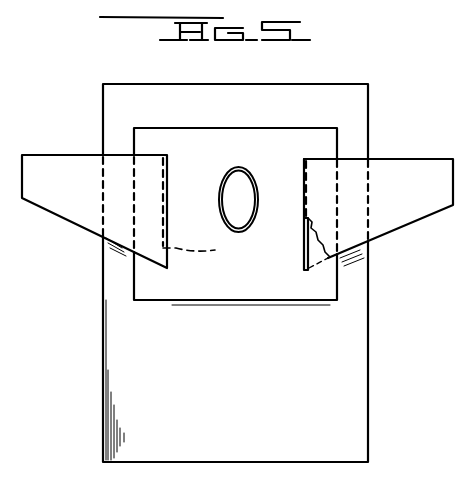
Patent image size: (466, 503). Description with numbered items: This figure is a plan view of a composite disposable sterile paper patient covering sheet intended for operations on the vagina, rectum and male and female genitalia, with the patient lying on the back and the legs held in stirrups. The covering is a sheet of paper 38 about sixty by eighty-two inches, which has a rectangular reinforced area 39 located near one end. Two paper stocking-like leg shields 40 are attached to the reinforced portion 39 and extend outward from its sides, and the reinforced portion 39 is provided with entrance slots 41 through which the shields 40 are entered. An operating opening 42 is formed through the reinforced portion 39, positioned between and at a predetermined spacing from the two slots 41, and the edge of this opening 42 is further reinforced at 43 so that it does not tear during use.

The sheet of paper 38 is at (347, 61).
The rectangular reinforced area 39 is at (250, 108).
The leg shields 40 is at (80, 150).
The entrance slots 41 is at (302, 249).
The operating opening 42 is at (241, 190).
The reinforcement 43 is at (222, 181).